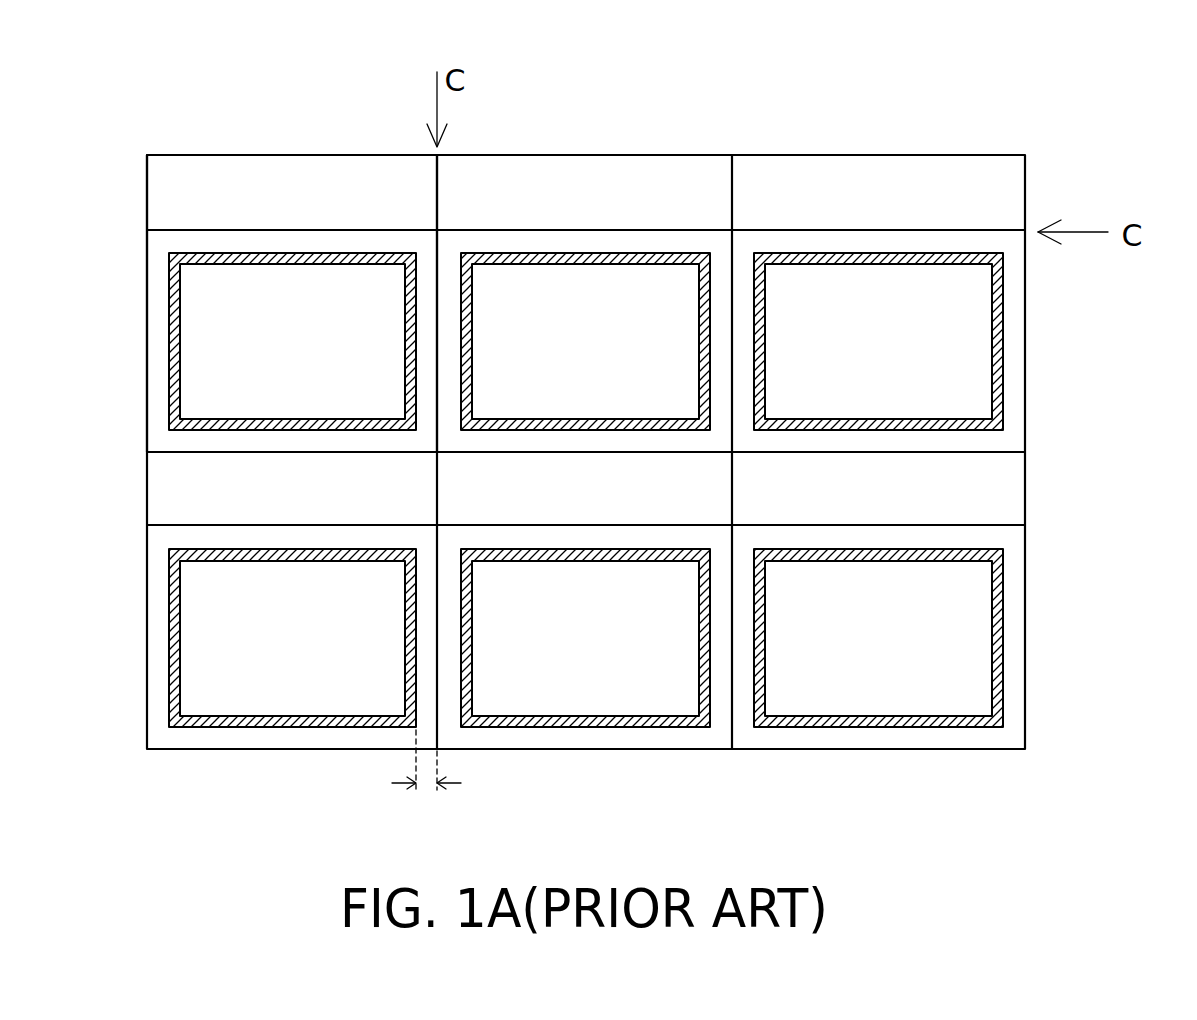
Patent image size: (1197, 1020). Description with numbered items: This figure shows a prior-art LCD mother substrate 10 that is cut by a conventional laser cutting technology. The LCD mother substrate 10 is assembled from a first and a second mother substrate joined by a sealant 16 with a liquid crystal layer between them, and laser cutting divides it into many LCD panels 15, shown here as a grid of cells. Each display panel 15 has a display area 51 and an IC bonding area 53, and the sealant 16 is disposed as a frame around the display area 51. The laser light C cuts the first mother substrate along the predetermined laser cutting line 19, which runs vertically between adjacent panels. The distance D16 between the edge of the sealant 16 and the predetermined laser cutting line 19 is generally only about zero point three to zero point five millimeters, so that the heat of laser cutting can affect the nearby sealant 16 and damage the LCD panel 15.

The LCD mother substrate 10 is at (1181, 54).
The LCD panel 15 is at (147, 153).
The sealant 16 is at (205, 430).
The predetermined laser cutting line 19 is at (440, 193).
The display area 51 is at (276, 358).
The IC bonding area 53 is at (276, 210).
The distance between edge of sealant and predetermined laser cutting line D16 is at (426, 776).